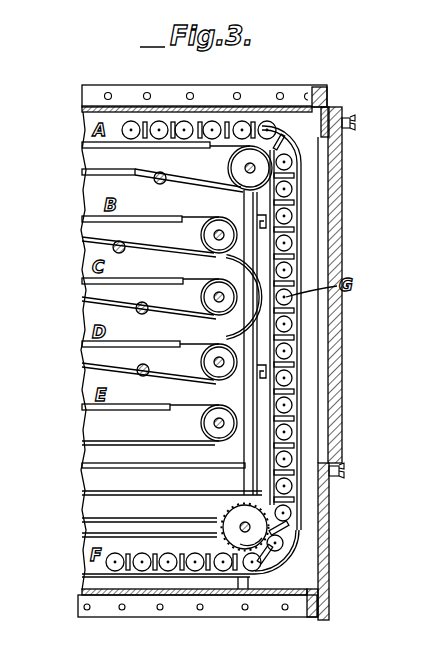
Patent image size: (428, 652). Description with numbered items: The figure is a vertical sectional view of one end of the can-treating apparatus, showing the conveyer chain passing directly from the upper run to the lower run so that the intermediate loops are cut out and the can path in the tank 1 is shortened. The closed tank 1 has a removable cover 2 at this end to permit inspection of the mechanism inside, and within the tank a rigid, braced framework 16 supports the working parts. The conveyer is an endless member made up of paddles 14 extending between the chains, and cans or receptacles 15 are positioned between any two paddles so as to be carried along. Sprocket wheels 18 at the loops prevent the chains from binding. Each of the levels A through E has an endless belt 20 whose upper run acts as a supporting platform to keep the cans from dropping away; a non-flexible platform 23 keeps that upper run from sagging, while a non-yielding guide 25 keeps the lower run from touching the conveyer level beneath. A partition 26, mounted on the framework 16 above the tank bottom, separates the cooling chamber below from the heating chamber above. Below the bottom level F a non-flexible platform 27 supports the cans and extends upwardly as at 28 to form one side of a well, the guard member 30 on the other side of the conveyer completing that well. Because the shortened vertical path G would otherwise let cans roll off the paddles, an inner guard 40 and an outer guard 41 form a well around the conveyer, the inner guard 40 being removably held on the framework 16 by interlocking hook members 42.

The closed tank 1 is at (330, 581).
The removable cover 2 is at (340, 372).
The paddles 14 is at (286, 254).
The cans or receptacles 15 is at (132, 126).
The framework 16 is at (252, 348).
The sprocket wheels 18 is at (228, 512).
The endless belt 20 is at (232, 156).
The non-flexible platform 23 is at (94, 186).
The non-yielding guide 25 is at (94, 284).
The partition 26 is at (172, 484).
The non-flexible platform 27 is at (190, 577).
The upward extension of platform 28 is at (300, 548).
The guard member 30 is at (246, 465).
The inner guard 40 is at (252, 204).
The outer guard 41 is at (302, 213).
The interlocking hook members 42 is at (257, 372).